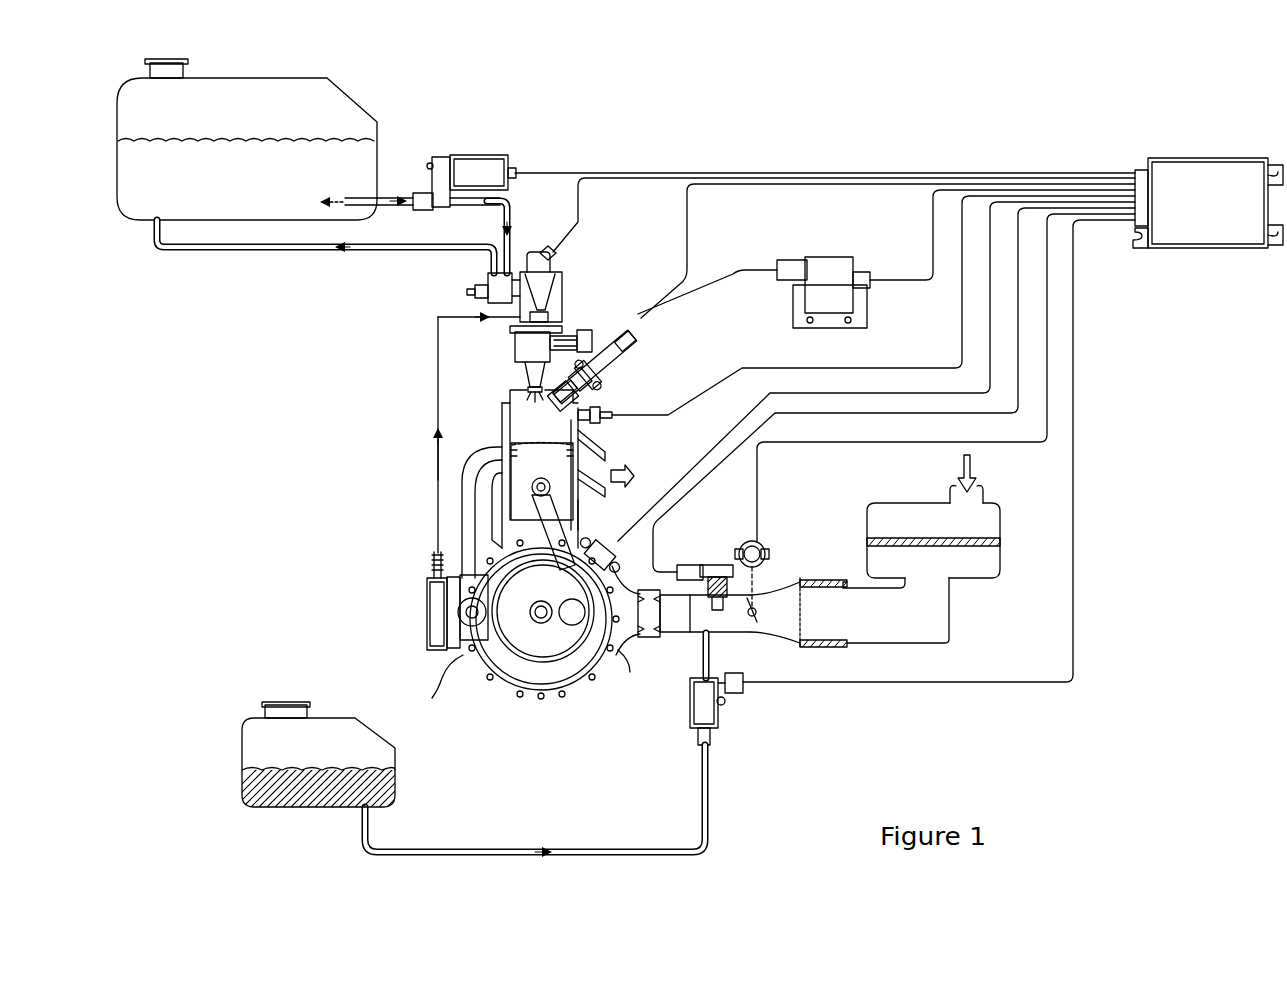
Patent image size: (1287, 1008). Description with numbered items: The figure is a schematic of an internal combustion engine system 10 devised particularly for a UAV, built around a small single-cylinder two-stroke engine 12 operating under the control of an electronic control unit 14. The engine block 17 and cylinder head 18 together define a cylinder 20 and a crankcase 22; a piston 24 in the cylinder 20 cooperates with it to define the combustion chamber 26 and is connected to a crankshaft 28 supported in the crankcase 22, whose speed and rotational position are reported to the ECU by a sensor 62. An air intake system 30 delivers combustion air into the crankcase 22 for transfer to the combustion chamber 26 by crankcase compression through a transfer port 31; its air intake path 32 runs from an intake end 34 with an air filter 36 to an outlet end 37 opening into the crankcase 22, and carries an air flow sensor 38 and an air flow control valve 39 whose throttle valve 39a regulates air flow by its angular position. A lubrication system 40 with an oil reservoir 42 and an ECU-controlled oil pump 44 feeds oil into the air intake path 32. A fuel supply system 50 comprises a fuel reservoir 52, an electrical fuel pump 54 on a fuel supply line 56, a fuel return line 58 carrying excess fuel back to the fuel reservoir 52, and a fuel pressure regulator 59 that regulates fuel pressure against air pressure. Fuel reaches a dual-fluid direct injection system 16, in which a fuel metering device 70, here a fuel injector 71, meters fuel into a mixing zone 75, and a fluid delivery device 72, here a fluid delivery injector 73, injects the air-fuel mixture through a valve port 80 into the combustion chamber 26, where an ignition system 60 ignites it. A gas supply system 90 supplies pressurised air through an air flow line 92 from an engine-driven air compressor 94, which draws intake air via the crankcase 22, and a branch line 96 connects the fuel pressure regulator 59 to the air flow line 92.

The internal combustion engine system 10 is at (300, 436).
The engine 12 is at (584, 700).
The electronic control unit 14 is at (1210, 235).
The dual-fluid direct injection system 16 is at (553, 256).
The engine block 17 is at (578, 512).
The cylinder head 18 is at (602, 392).
The cylinder 20 is at (538, 428).
The crankcase 22 is at (462, 656).
The piston 24 is at (497, 466).
The combustion chamber 26 is at (590, 448).
The crankshaft 28 is at (539, 620).
The air intake system 30 is at (949, 613).
The transfer port 31 is at (478, 518).
The air intake path 32 is at (800, 593).
The intake end 34 is at (985, 494).
The air filter 36 is at (1000, 568).
The outlet end 37 is at (648, 633).
The air flow sensor 38 is at (722, 565).
The air flow control valve 39 is at (756, 608).
The throttle valve 39a is at (830, 647).
The lubrication system 40 is at (712, 832).
The oil reservoir 42 is at (262, 748).
The oil pump 44 is at (722, 708).
The fuel supply system 50 is at (405, 185).
The fuel reservoir 52 is at (188, 196).
The electrical fuel pump 54 is at (482, 158).
The fuel supply line 56 is at (498, 208).
The fuel return line 58 is at (280, 252).
The fuel pressure regulator 59 is at (467, 291).
The ignition system 60 is at (650, 345).
The sensor 62 is at (616, 548).
The fuel metering device 70 is at (563, 290).
The fuel injector 71 is at (550, 300).
The fluid delivery device 72 is at (530, 353).
The fluid delivery injector 73 is at (528, 385).
The mixing zone 75 is at (522, 396).
The valve port 80 is at (605, 375).
The gas supply system 90 is at (438, 490).
The air flow line 92 is at (438, 462).
The air compressor 94 is at (428, 605).
The branch line 96 is at (438, 312).